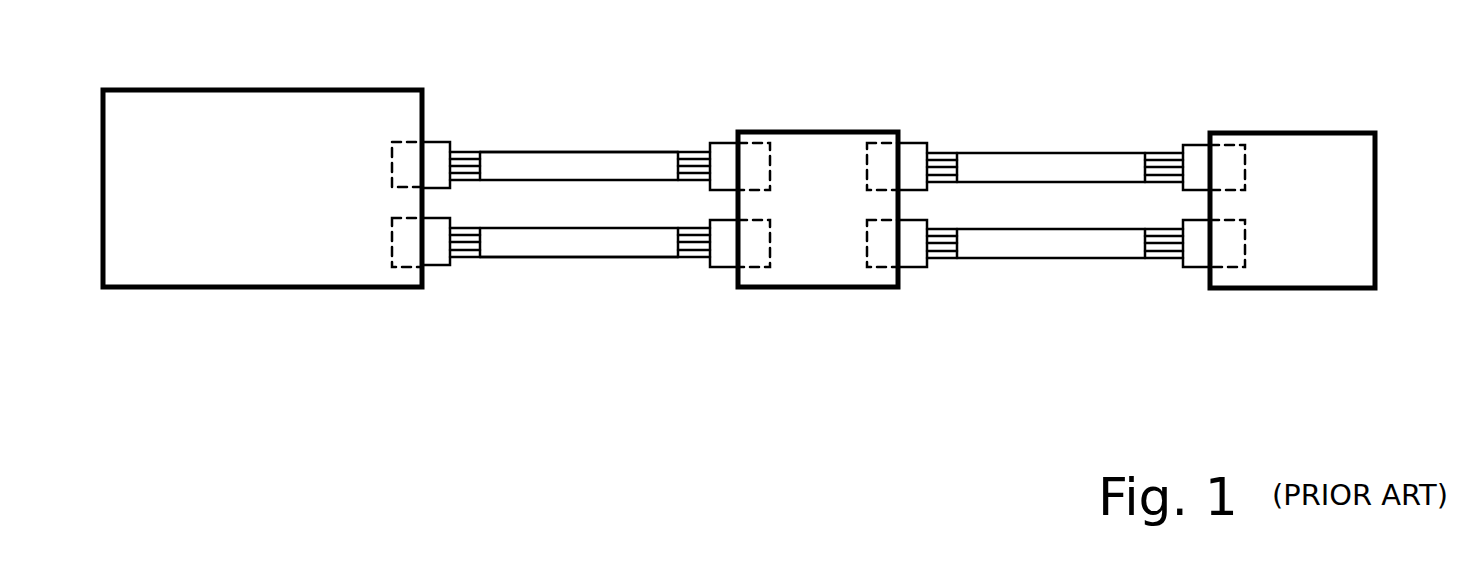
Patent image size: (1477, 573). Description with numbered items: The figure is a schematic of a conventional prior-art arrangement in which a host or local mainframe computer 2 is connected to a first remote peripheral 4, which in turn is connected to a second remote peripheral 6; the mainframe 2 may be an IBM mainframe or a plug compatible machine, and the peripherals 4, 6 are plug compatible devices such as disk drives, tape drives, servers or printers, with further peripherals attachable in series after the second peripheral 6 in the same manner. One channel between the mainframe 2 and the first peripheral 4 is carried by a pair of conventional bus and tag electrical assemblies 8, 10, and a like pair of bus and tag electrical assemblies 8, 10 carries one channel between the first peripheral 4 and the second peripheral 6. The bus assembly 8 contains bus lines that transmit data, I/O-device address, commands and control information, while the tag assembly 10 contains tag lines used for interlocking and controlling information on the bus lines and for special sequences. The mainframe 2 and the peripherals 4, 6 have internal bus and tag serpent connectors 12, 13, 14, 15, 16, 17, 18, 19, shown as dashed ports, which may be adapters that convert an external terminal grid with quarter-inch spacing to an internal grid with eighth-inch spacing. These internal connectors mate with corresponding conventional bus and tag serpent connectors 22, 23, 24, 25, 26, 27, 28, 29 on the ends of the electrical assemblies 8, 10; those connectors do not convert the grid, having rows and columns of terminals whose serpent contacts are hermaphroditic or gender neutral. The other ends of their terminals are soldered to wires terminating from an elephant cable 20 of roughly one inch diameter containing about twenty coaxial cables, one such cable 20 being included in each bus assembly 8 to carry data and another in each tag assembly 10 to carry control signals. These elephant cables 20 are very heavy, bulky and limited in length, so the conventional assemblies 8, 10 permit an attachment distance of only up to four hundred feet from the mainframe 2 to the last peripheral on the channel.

The mainframe 2 is at (252, 65).
The first peripheral 4 is at (808, 107).
The second peripheral 6 is at (1295, 108).
The bus electrical assembly 8 is at (550, 142).
The tag electrical assembly 10 is at (560, 267).
The internal bus and tag serpent connector 12 is at (392, 167).
The internal bus and tag serpent connector 13 is at (392, 237).
The internal bus and tag serpent connector 14 is at (770, 183).
The internal bus and tag serpent connector 15 is at (770, 258).
The internal bus and tag serpent connector 16 is at (868, 180).
The internal bus and tag serpent connector 17 is at (868, 248).
The internal bus and tag serpent connector 18 is at (1245, 170).
The internal bus and tag serpent connector 19 is at (1245, 248).
The elephant cable 20 is at (630, 150).
The bus and tag serpent connector 22 is at (445, 142).
The bus and tag serpent connector 23 is at (443, 267).
The bus and tag serpent connector 24 is at (735, 188).
The bus and tag serpent connector 25 is at (723, 267).
The bus and tag serpent connector 26 is at (912, 143).
The bus and tag serpent connector 27 is at (918, 269).
The bus and tag serpent connector 28 is at (1187, 145).
The bus and tag serpent connector 29 is at (1187, 270).